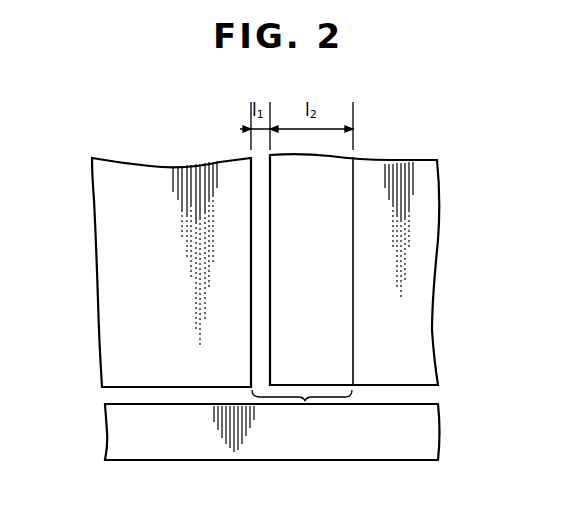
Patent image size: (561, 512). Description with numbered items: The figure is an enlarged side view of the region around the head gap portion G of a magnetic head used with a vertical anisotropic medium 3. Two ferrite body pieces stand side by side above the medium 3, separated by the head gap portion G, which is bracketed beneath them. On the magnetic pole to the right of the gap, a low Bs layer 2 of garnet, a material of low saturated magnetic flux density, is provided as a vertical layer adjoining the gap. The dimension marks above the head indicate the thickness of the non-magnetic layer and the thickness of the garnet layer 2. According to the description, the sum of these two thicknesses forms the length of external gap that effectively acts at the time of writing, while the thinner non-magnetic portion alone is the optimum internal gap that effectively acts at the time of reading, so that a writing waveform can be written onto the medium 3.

The low Bs layer 2 is at (350, 287).
The vertical anisotropic medium 3 is at (425, 431).
The head gap portion G is at (305, 401).